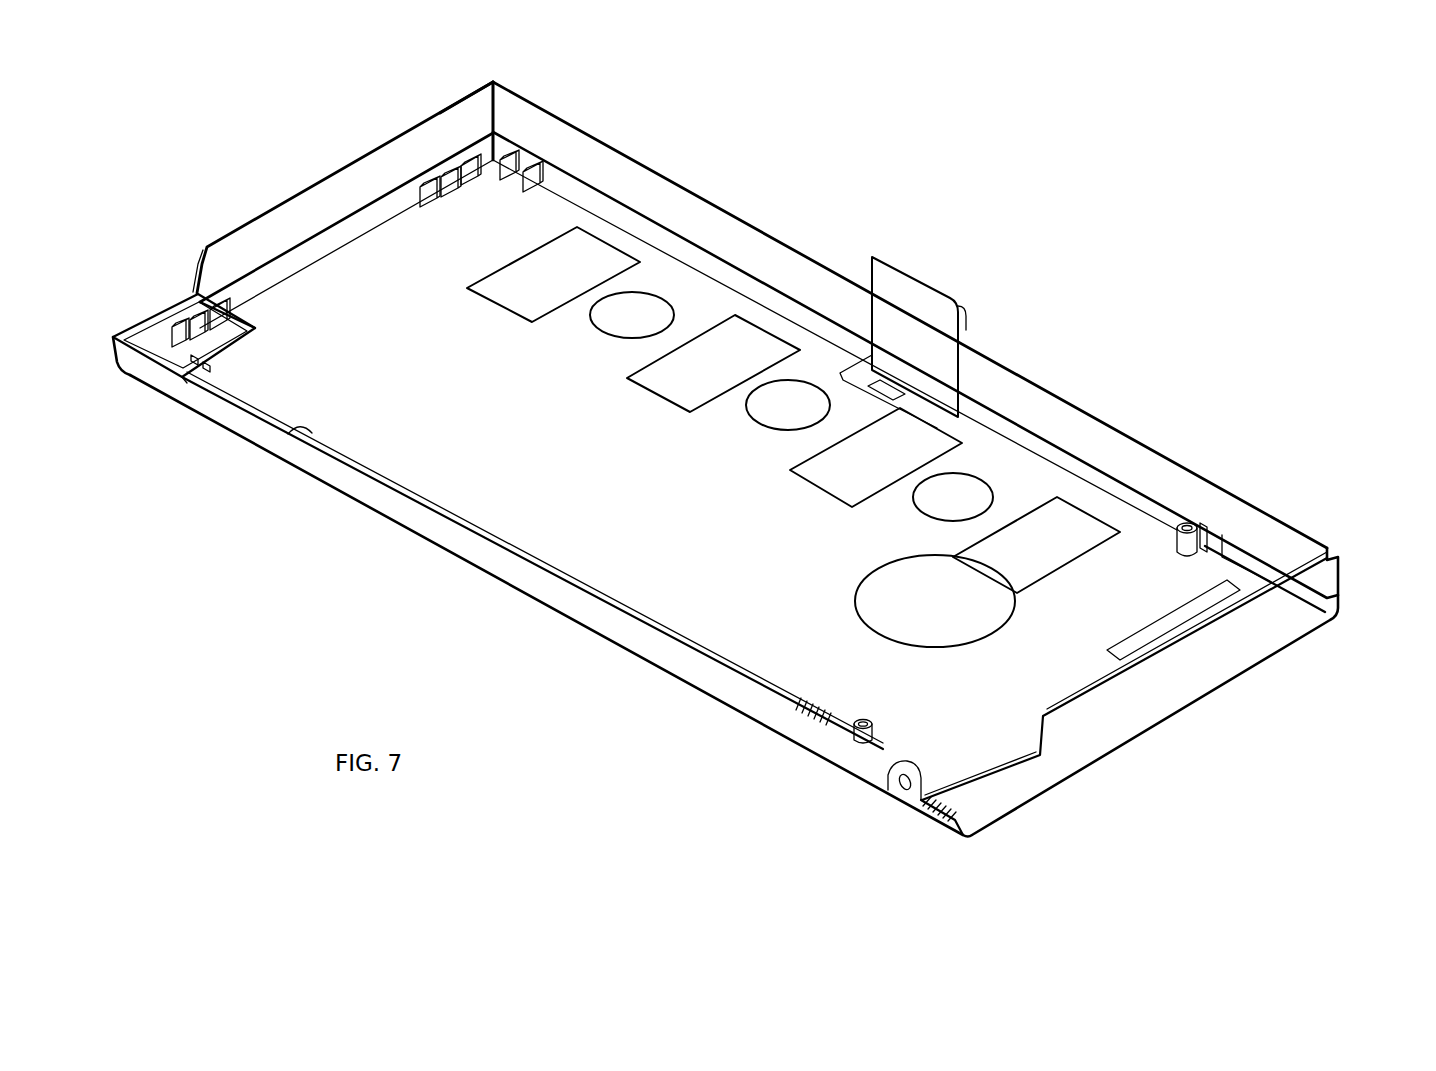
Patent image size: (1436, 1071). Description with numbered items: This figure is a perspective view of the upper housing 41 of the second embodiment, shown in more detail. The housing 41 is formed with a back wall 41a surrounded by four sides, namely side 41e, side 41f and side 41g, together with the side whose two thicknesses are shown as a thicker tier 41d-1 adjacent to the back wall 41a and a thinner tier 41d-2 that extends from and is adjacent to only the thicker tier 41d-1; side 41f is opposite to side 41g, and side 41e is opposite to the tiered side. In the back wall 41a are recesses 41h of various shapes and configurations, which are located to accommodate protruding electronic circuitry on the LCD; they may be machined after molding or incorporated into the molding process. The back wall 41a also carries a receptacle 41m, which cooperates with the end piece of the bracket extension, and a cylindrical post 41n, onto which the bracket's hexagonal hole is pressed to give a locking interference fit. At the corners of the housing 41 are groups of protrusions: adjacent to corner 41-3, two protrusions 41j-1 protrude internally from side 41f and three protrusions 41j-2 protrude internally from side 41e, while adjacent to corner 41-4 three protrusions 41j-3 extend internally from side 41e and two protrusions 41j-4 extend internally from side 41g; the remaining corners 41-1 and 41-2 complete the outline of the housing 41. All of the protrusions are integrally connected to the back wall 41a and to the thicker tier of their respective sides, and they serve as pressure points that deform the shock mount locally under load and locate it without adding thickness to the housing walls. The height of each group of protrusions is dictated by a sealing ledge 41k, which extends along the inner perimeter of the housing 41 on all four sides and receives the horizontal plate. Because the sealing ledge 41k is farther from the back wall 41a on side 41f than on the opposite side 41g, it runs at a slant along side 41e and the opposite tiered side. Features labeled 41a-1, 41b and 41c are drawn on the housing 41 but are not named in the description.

The housing 41 is at (1232, 724).
The corner of housing 41-1 is at (1000, 826).
The corner of housing 41-2 is at (438, 86).
The corner of housing 41-3 is at (502, 68).
The corner of housing 41-4 is at (123, 370).
The back wall 41a is at (657, 523).
The tab on bottom plate 41a-1 is at (889, 387).
The hinge tab 41b is at (882, 768).
The upright plate 41c is at (918, 298).
The thicker tier of side 41d 41d-1 is at (1330, 598).
The thinner tier of side 41d 41d-2 is at (1330, 552).
The side 41e is at (373, 170).
The side 41f is at (1076, 408).
The side 41g is at (445, 570).
The recesses 41h is at (570, 290).
The protrusions 41j-1 is at (528, 188).
The protrusions 41j-2 is at (470, 183).
The protrusions 41j-3 is at (210, 302).
The protrusions 41j-4 is at (250, 343).
The sealing ledge 41k is at (305, 232).
The receptacle 41m is at (1191, 520).
The cylindrical post 41n is at (866, 716).